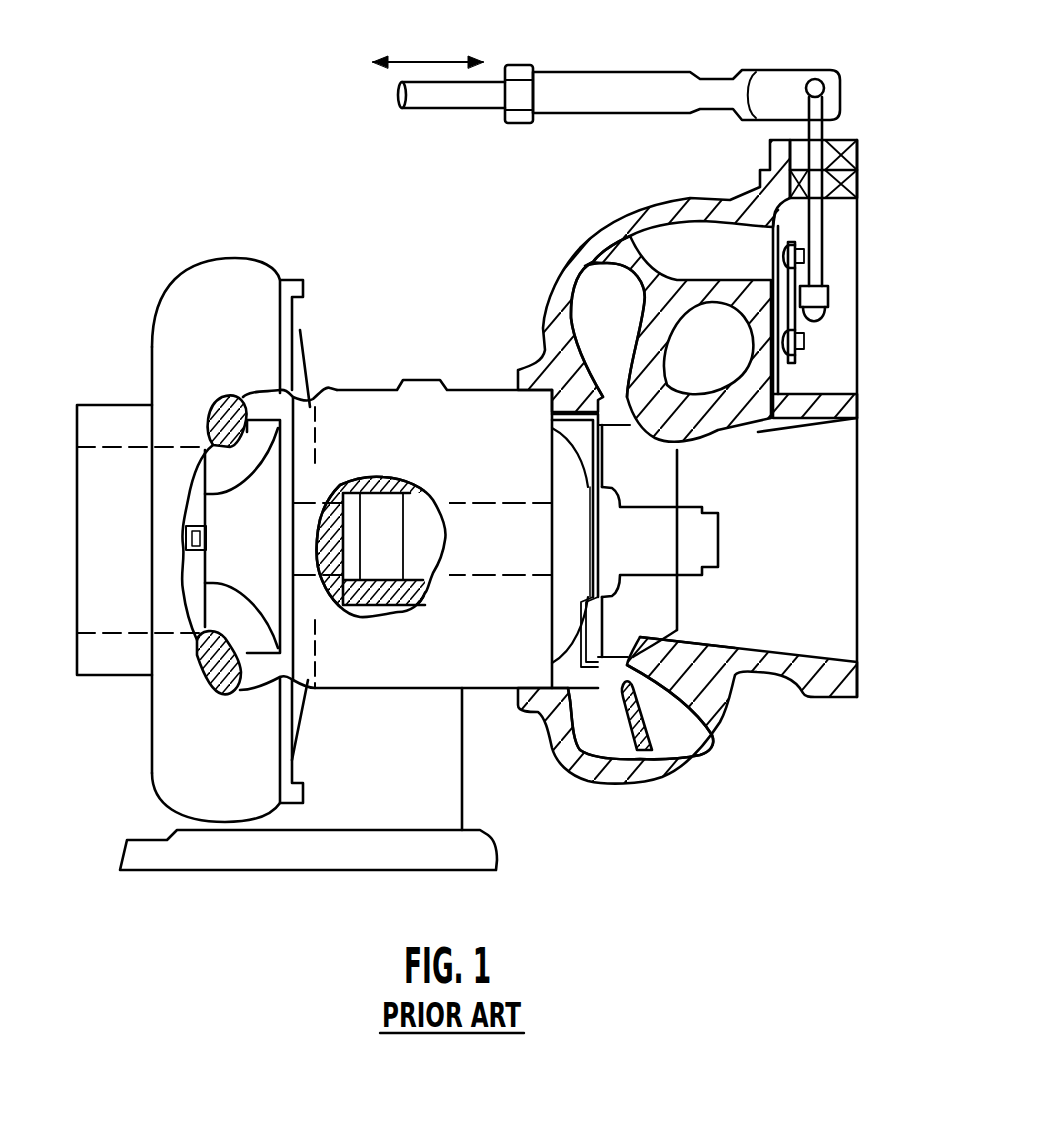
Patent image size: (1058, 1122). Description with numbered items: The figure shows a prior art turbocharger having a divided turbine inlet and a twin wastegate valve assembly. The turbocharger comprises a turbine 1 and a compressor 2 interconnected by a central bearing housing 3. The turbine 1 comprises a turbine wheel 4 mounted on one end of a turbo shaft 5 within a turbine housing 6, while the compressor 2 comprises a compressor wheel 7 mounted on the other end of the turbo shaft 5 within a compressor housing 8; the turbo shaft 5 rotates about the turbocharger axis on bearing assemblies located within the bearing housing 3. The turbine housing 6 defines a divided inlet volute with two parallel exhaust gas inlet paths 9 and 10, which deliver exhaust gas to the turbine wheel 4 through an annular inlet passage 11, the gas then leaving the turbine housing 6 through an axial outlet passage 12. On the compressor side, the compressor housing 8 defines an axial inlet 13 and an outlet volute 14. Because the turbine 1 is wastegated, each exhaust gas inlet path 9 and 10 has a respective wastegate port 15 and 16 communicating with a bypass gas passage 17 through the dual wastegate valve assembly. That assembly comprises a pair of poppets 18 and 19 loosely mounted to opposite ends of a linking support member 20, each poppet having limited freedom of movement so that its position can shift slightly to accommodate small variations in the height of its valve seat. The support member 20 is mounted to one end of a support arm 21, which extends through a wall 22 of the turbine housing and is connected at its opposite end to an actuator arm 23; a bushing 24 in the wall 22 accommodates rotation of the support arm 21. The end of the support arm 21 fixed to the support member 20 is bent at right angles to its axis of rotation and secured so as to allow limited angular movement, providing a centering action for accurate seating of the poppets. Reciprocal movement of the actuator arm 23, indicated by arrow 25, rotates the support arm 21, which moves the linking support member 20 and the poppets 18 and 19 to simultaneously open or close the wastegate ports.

The turbine 1 is at (708, 748).
The compressor 2 is at (248, 258).
The bearing housing 3 is at (355, 390).
The turbine wheel 4 is at (662, 484).
The turbo shaft 5 is at (417, 547).
The turbine housing 6 is at (650, 753).
The compressor wheel 7 is at (233, 572).
The compressor housing 8 is at (187, 748).
The exhaust gas inlet path 9 is at (707, 360).
The exhaust gas inlet path 10 is at (602, 290).
The annular inlet passage 11 is at (708, 706).
The axial outlet passage 12 is at (835, 615).
The axial inlet 13 is at (93, 610).
The outlet volute 14 is at (443, 752).
The wastegate port 15 is at (777, 428).
The wastegate port 16 is at (745, 250).
The bypass gas passage 17 is at (837, 347).
The poppet 18 is at (800, 410).
The poppet 19 is at (777, 231).
The linking support member 20 is at (822, 330).
The support arm 21 is at (812, 127).
The wall 22 is at (835, 163).
The actuator arm 23 is at (622, 90).
The bushing 24 is at (838, 175).
The arrow 25 is at (432, 60).